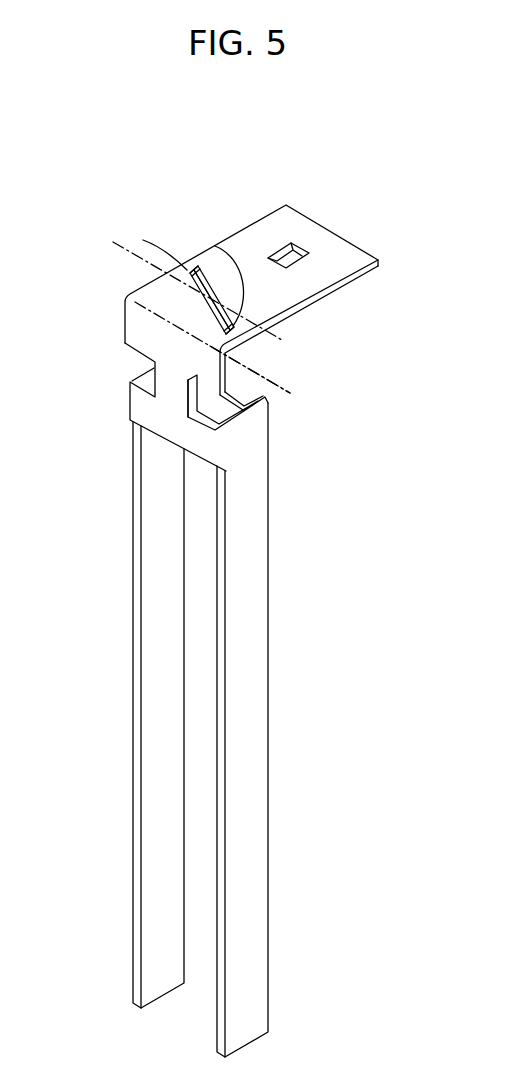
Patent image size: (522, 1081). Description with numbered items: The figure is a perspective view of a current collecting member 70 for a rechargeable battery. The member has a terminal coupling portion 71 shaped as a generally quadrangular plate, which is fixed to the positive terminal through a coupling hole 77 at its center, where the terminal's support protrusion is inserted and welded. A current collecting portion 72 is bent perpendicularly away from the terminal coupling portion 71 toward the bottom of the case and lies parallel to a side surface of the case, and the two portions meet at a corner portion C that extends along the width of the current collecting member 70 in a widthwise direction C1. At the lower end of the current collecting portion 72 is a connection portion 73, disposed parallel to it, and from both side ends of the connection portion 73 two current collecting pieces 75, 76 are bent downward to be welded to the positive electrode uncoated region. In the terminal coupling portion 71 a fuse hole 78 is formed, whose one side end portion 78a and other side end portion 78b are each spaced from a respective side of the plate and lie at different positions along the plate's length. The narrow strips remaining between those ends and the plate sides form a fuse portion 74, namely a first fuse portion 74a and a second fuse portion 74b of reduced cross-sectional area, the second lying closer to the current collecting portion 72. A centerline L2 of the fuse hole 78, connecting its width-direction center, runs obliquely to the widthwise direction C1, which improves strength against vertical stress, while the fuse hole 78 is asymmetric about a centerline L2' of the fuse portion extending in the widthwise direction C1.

The current collecting member 70 is at (256, 214).
The terminal coupling portion 71 is at (313, 238).
The current collecting portion 72 is at (124, 320).
The connection portion 73 is at (170, 423).
The fuse portion 74 is at (177, 260).
The first fuse portion 74a is at (187, 270).
The second fuse portion 74b is at (215, 246).
The current collecting piece 75 is at (250, 643).
The current collecting piece 76 is at (137, 647).
The coupling hole 77 is at (290, 266).
The fuse hole 78 is at (212, 282).
The one side end portion of the fuse hole 78a is at (193, 277).
The other side end portion of the fuse hole 78b is at (233, 327).
The corner portion C is at (160, 330).
The widthwise direction C1 is at (268, 379).
The centerline of the fuse hole L2 is at (280, 329).
The centerline of the fuse portion L2' is at (243, 299).